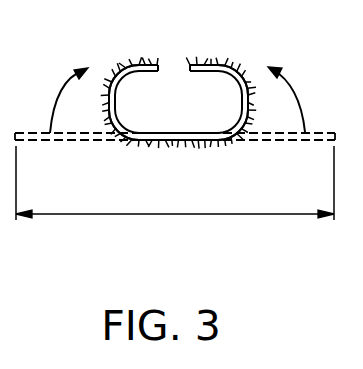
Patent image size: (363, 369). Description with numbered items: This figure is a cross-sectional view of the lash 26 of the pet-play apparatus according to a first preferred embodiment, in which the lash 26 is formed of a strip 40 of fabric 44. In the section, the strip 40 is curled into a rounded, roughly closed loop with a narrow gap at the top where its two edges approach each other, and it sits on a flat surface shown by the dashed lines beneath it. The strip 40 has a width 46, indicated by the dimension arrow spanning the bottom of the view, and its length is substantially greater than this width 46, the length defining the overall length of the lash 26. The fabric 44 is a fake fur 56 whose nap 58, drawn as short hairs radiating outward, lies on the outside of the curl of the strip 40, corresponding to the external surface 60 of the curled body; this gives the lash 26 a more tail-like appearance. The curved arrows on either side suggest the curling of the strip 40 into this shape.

The lash 26 is at (206, 106).
The strip 40 is at (148, 61).
The nap 58 is at (230, 67).
The fake fur 56 is at (107, 108).
The external surface 60 is at (173, 148).
The fabric 44 is at (238, 147).
The width 46 is at (173, 216).